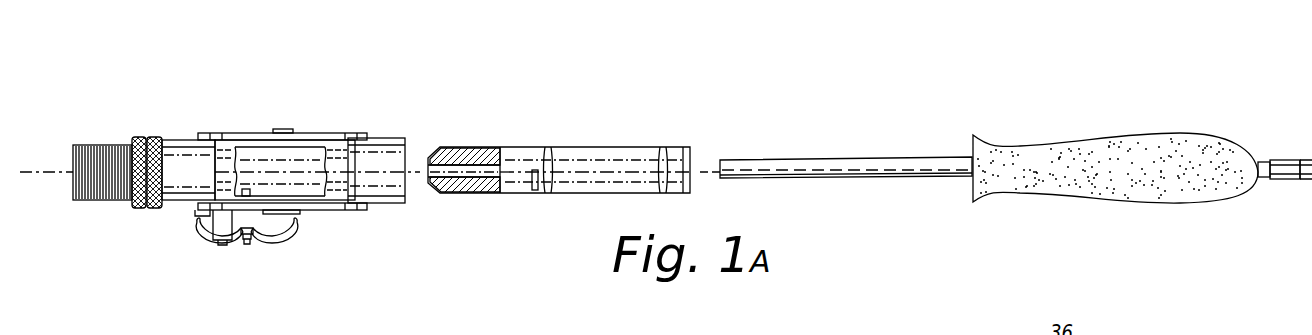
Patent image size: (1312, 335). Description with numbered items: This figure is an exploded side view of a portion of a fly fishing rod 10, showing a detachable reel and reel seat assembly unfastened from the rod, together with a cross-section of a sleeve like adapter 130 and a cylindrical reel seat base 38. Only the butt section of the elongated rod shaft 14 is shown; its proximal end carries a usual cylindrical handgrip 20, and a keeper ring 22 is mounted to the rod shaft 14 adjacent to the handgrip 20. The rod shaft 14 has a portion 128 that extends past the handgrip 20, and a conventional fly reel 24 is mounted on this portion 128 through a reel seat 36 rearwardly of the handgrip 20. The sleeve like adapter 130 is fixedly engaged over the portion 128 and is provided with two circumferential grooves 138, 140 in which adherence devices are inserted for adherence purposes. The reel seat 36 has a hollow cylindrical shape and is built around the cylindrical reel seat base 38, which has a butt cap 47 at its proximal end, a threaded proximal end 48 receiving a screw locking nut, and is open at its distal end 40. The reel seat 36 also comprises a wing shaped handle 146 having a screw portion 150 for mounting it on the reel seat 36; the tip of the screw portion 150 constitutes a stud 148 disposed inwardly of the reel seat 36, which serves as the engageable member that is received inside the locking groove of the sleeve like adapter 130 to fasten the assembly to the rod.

The fly fishing rod 10 is at (1016, 135).
The rod shaft 14 is at (1305, 160).
The handgrip 20 is at (1168, 148).
The keeper ring 22 is at (1283, 180).
The fly reel 24 is at (328, 138).
The reel seat 36 is at (182, 237).
The reel seat base 38 is at (178, 160).
The distal end 40 is at (400, 138).
The butt cap 47 is at (73, 147).
The threaded proximal end 48 is at (108, 158).
The portion 128 is at (835, 160).
The sleeve like adapter 130 is at (576, 120).
The circumferential groove 138 is at (548, 160).
The circumferential groove 140 is at (663, 160).
The handle 146 is at (300, 250).
The stud 148 is at (246, 189).
The screw portion 150 is at (247, 245).